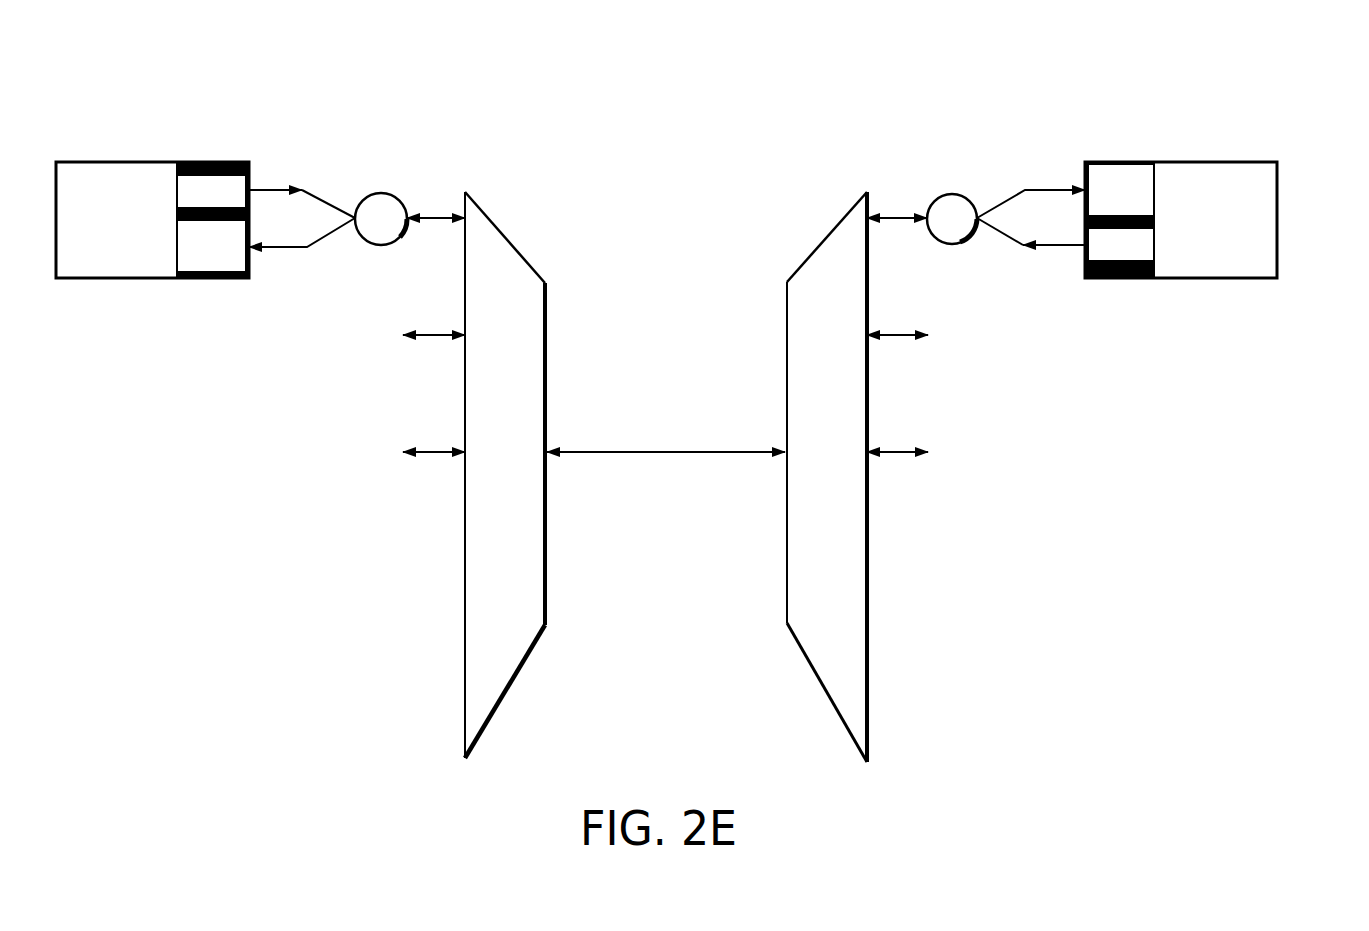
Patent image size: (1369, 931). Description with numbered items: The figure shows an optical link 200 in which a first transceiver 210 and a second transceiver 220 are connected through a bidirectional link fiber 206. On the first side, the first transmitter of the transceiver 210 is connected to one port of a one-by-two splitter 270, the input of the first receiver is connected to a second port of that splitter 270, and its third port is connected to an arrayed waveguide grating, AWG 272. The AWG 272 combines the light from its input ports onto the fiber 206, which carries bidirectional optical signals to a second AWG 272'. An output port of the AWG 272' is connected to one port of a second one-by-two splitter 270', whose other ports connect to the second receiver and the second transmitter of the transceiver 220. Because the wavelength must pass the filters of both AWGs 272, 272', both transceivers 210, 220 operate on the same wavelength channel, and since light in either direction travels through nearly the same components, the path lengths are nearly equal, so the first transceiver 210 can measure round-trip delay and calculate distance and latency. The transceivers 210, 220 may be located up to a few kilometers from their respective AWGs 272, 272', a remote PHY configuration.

The optical link 200 is at (128, 65).
The first transceiver 210 is at (153, 280).
The second transceiver 220 is at (1278, 218).
The 1×2 splitter 270 is at (357, 248).
The 1×2 splitter 270' is at (976, 248).
The AWG 272 is at (463, 475).
The AWG 272' is at (810, 477).
The bidirectional link fiber 206 is at (677, 455).